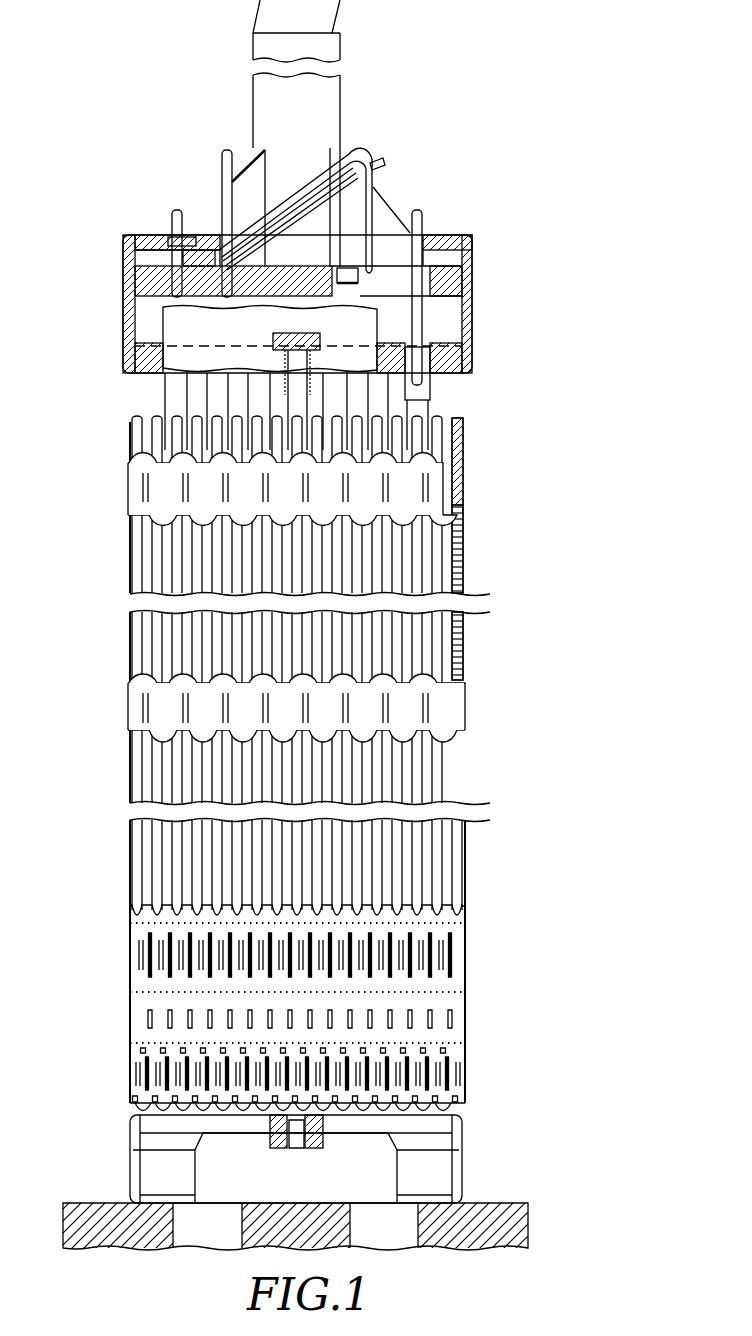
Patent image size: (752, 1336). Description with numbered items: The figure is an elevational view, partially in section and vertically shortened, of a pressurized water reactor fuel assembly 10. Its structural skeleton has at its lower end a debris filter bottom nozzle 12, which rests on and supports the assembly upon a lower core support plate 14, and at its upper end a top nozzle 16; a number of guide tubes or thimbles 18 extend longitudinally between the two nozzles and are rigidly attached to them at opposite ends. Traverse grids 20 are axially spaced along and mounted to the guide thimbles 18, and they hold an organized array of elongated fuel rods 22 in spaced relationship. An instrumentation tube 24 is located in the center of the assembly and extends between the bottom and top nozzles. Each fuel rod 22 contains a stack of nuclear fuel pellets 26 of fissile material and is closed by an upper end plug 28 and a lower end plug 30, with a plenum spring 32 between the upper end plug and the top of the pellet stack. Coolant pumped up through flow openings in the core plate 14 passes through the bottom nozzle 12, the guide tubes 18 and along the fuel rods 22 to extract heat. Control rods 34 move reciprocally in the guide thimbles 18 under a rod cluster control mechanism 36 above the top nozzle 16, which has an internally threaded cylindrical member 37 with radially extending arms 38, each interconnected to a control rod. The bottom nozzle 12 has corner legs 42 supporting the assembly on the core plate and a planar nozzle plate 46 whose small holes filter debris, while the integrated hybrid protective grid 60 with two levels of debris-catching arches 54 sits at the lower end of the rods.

The fuel assembly 10 is at (545, 295).
The debris filter bottom nozzle 12 is at (462, 1138).
The lower core support plate 14 is at (507, 1203).
The top nozzle 16 is at (475, 282).
The guide tubes or thimbles 18 is at (432, 402).
The traverse grids 20 is at (128, 488).
The fuel rods 22 is at (130, 632).
The instrumentation tube 24 is at (292, 1150).
The nuclear fuel pellets 26 is at (463, 565).
The upper end plug 28 is at (455, 418).
The lower end plug 30 is at (380, 1105).
The plenum spring 32 is at (463, 470).
The control rods 34 is at (462, 328).
The rod cluster control mechanism 36 is at (368, 143).
The internally threaded cylindrical member 37 is at (343, 88).
The radially-extending flukes or arms 38 is at (207, 232).
The corner legs 42 is at (130, 1155).
The nozzle plate 46 is at (150, 1108).
The debris-catching arches 54 is at (452, 1097).
The integrated hybrid protective grid 60 is at (460, 983).